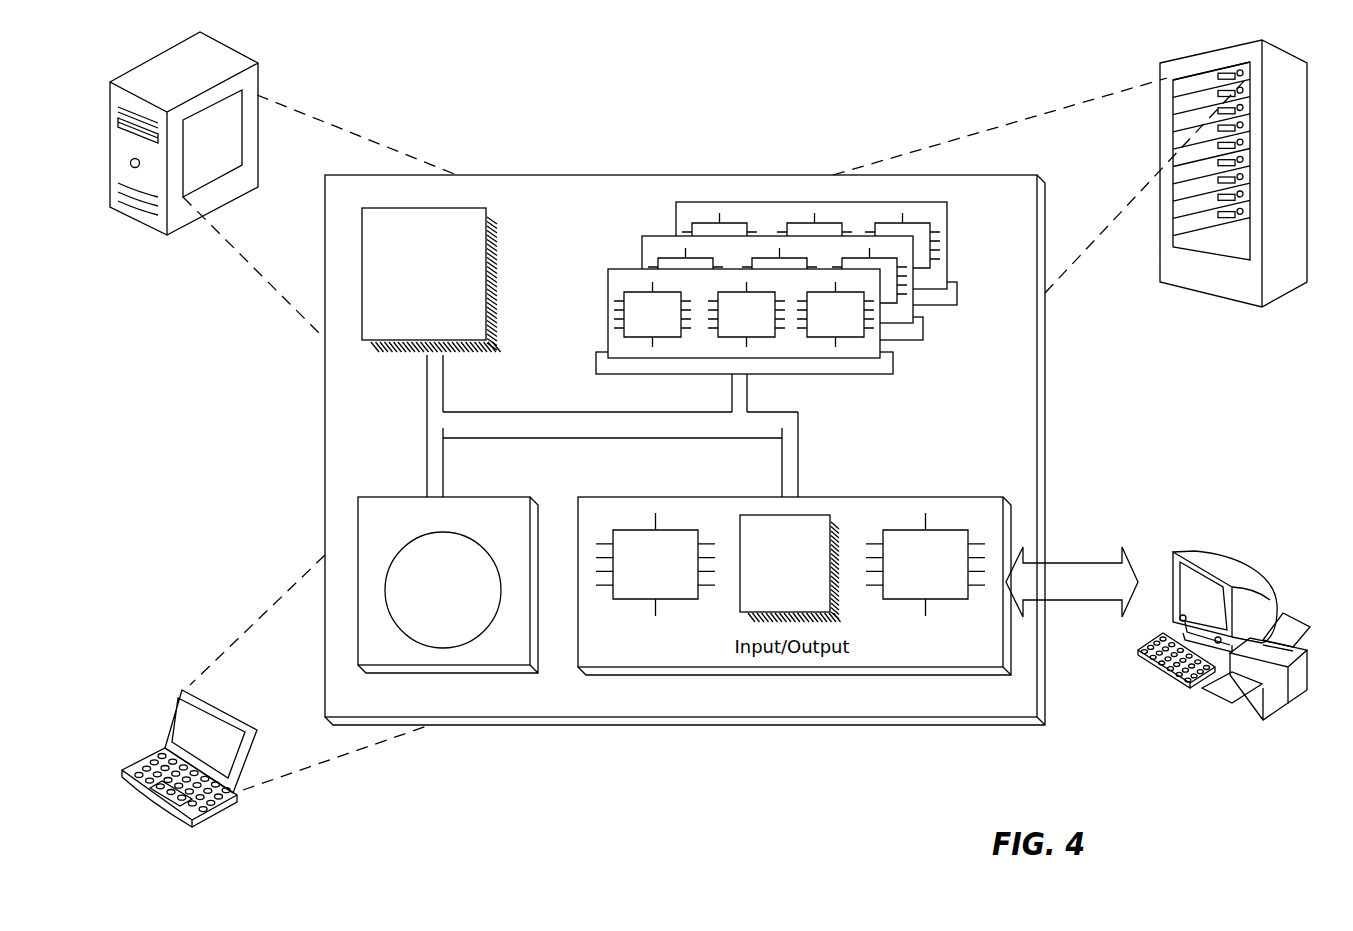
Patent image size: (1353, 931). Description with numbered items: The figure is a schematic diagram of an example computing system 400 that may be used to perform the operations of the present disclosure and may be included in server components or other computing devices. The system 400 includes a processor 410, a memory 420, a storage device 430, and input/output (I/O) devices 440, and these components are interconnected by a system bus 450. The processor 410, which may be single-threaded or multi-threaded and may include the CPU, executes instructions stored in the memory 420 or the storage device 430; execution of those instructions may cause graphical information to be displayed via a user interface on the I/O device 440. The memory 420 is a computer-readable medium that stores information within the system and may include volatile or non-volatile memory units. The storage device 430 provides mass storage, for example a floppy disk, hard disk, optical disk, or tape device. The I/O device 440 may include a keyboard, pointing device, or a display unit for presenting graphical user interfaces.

The computing system 400 is at (515, 104).
The processor 410 is at (445, 333).
The memory 420 is at (951, 336).
The storage device 430 is at (488, 658).
The input/output (I/O) device 440 is at (1176, 553).
The system bus 450 is at (605, 432).